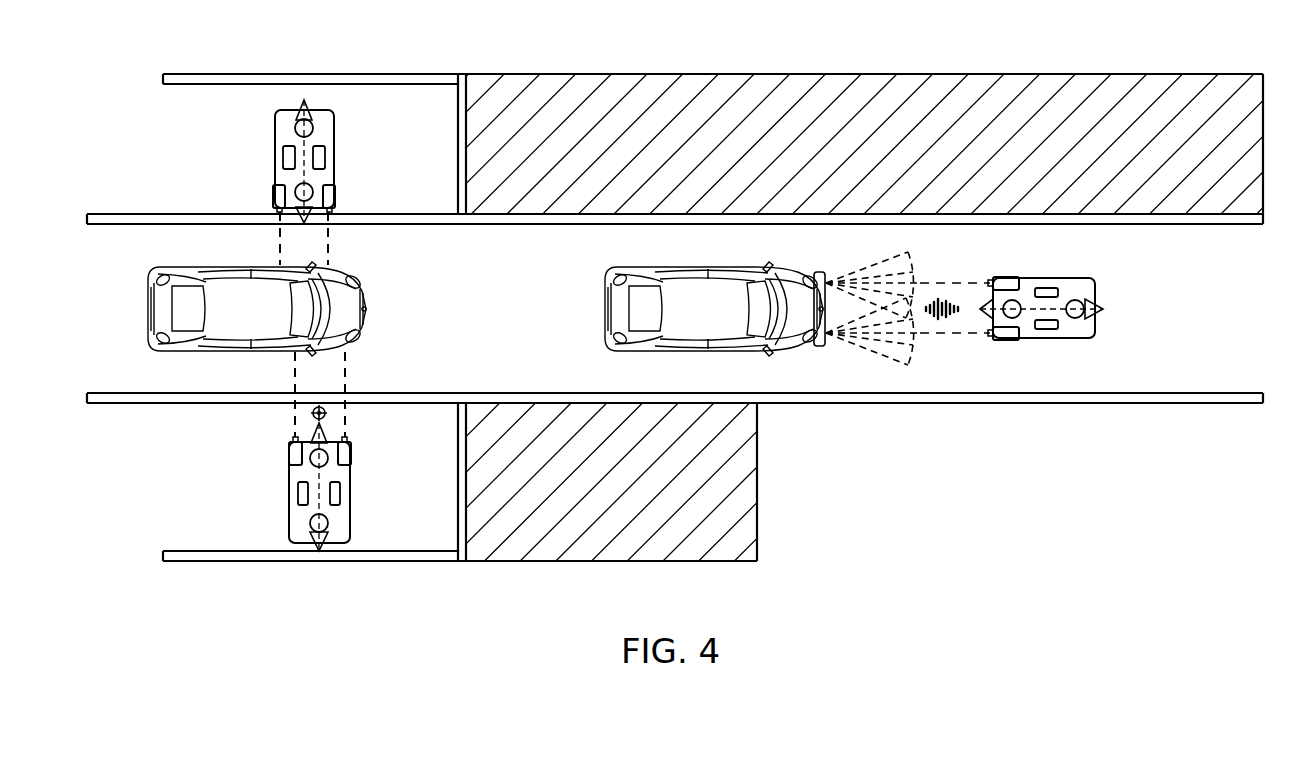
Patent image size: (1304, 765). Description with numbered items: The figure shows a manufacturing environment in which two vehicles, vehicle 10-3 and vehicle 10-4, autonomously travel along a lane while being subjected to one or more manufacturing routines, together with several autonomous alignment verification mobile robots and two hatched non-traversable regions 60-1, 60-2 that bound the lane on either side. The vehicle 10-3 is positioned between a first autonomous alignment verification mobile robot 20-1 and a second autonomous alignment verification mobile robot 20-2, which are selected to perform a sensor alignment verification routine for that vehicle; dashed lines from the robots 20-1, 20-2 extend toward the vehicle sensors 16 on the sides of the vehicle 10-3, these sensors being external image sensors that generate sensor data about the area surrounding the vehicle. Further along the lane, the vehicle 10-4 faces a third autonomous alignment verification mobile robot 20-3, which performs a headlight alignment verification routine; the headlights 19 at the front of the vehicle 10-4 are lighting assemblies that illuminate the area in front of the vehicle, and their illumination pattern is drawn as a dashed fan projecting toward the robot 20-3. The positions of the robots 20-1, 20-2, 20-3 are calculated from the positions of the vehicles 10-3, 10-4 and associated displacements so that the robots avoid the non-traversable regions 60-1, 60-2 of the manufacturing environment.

The vehicle 10-3 is at (222, 307).
The vehicle 10-4 is at (743, 307).
The vehicle sensors 16 is at (354, 307).
The headlights 19 is at (818, 348).
The autonomous alignment verification mobile robot 20-1 is at (265, 128).
The autonomous alignment verification mobile robot 20-2 is at (276, 498).
The autonomous alignment verification mobile robot 20-3 is at (1118, 309).
The non-traversable region 60-1 is at (1138, 130).
The non-traversable region 60-2 is at (728, 490).